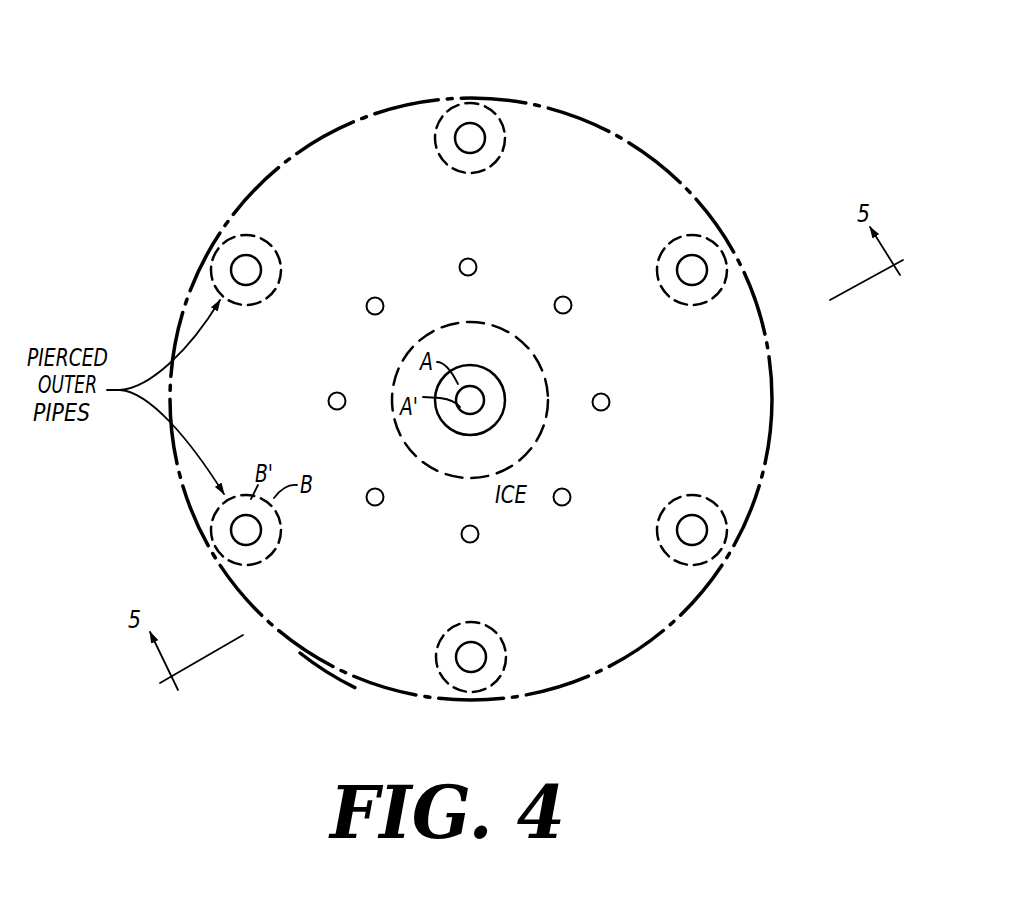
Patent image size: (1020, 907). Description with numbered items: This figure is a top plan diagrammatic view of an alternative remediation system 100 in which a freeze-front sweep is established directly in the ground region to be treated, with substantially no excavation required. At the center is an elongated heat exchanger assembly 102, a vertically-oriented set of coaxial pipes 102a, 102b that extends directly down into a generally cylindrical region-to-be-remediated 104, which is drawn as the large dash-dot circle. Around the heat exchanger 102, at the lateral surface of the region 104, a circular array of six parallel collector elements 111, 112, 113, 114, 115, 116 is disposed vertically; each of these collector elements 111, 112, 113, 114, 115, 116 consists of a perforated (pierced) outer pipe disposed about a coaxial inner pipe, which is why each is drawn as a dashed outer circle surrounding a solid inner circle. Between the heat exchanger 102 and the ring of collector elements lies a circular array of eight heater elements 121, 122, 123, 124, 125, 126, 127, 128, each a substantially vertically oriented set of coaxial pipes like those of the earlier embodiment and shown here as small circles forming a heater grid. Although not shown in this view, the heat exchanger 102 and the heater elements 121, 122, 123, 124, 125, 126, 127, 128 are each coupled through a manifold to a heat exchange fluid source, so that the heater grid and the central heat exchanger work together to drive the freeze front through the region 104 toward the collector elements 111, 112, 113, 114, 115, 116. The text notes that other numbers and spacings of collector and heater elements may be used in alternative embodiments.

The system 100 is at (699, 75).
The heat exchanger assembly 102 is at (520, 423).
The coaxial pipe 102a is at (470, 364).
The coaxial pipe 102b is at (483, 391).
The region-to-be-remediated 104 is at (340, 640).
The collector element 111 is at (485, 700).
The collector element 112 is at (748, 540).
The collector element 113 is at (740, 253).
The collector element 114 is at (478, 92).
The collector element 115 is at (210, 231).
The collector element 116 is at (208, 537).
The heater element 121 is at (329, 403).
The heater element 122 is at (373, 506).
The heater element 123 is at (469, 543).
The heater element 124 is at (571, 497).
The heater element 125 is at (607, 395).
The heater element 126 is at (566, 297).
The heater element 127 is at (460, 262).
The heater element 128 is at (371, 298).